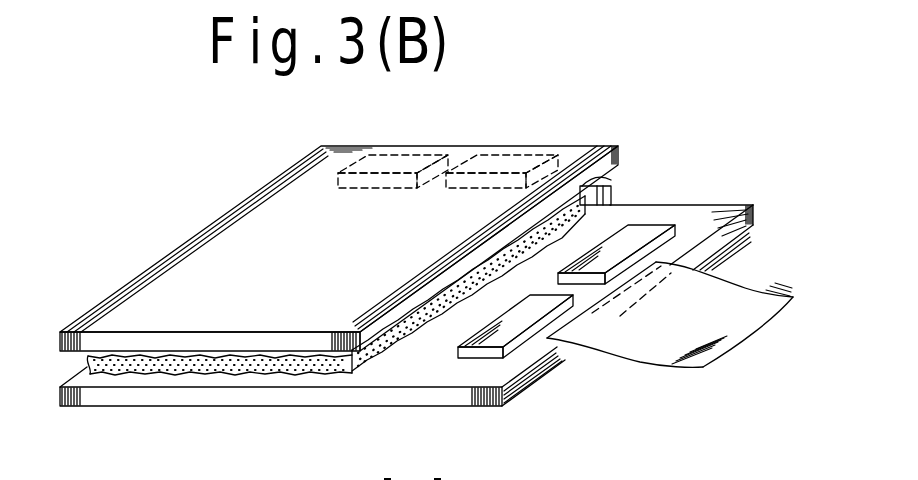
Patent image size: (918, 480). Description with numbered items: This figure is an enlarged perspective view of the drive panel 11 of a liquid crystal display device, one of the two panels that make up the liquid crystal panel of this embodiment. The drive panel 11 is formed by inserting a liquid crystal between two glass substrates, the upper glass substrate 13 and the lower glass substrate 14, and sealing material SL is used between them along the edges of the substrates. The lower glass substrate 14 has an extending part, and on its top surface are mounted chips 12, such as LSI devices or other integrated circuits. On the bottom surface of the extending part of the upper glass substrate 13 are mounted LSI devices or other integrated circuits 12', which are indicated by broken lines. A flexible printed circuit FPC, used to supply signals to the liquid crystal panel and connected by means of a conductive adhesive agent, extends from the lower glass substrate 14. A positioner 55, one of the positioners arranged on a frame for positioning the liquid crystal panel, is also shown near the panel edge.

The drive panel 11 is at (200, 178).
The chips 12 is at (591, 251).
The integrated circuits 12' is at (448, 136).
The upper glass substrate 13 is at (200, 257).
The lower glass substrate 14 is at (133, 398).
The positioners 55 is at (610, 193).
The sealing material SL is at (250, 363).
The flexible printed circuit FPC is at (641, 350).